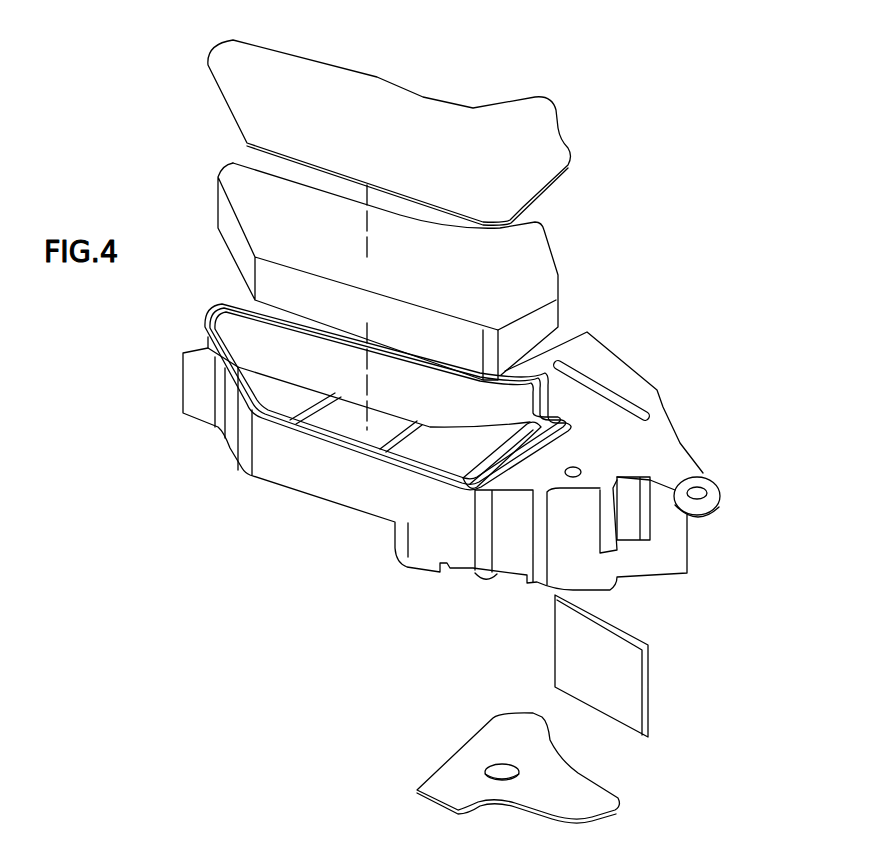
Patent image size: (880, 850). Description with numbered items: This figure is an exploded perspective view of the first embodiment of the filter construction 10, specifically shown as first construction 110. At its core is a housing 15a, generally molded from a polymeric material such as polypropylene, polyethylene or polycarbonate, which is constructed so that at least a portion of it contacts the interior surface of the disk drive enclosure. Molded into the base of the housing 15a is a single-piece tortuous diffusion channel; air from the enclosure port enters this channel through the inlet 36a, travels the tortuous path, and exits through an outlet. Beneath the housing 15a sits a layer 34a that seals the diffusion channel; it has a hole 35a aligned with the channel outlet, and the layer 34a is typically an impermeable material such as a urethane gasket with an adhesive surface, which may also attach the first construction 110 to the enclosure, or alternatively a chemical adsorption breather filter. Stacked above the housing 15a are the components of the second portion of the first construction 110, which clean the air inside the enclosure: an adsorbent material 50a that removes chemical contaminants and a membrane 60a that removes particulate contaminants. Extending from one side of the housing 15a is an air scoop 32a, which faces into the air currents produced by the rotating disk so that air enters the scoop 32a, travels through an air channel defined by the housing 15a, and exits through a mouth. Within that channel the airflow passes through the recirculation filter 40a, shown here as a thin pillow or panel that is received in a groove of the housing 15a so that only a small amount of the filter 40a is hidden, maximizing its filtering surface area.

The filter construction 10 is at (683, 49).
The first construction 110 is at (617, 126).
The membrane 60a is at (388, 75).
The adsorbent material 50a is at (561, 245).
The housing 15a is at (263, 498).
The scoop 32a is at (625, 352).
The inlet 36a is at (581, 470).
The recirculation filter 40a is at (662, 684).
The layer 34a is at (439, 750).
The hole 35a is at (518, 777).